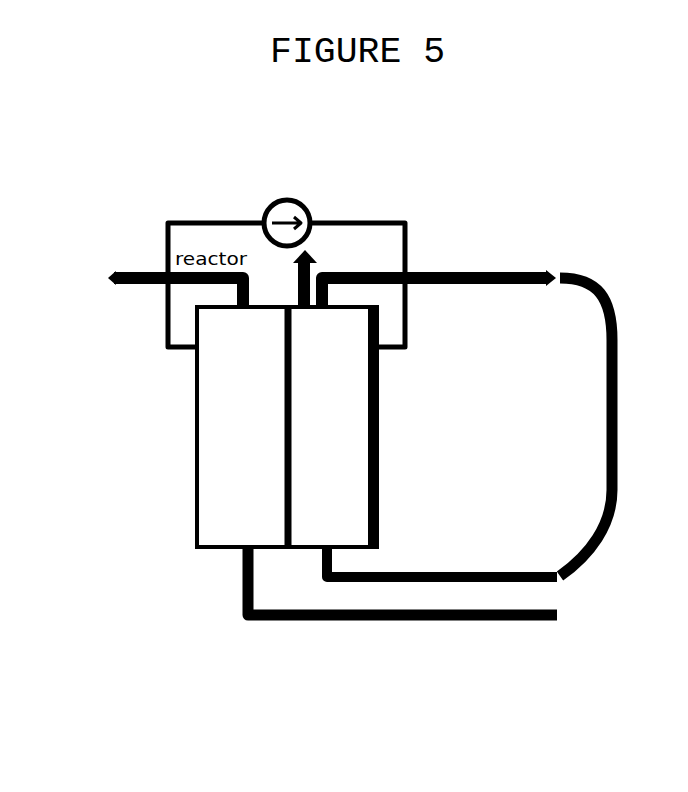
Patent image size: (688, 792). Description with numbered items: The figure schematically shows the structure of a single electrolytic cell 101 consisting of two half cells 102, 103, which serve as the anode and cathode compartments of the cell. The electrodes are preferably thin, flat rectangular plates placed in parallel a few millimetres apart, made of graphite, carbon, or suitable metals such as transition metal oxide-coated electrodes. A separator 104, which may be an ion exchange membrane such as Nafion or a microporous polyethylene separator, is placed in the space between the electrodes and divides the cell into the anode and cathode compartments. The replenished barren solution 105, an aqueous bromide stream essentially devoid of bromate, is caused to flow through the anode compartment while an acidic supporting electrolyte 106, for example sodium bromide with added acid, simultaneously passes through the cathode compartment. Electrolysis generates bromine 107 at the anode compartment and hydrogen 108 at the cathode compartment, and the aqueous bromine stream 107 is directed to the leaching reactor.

The single electrolytic cell 101 is at (582, 242).
The half cell 102 is at (184, 431).
The half cell 103 is at (389, 439).
The separator 104 is at (283, 566).
The replenished barren solution 105 is at (473, 631).
The acidic supporting electrolyte 106 is at (482, 542).
The bromine 107 is at (94, 281).
The hydrogen 108 is at (323, 264).